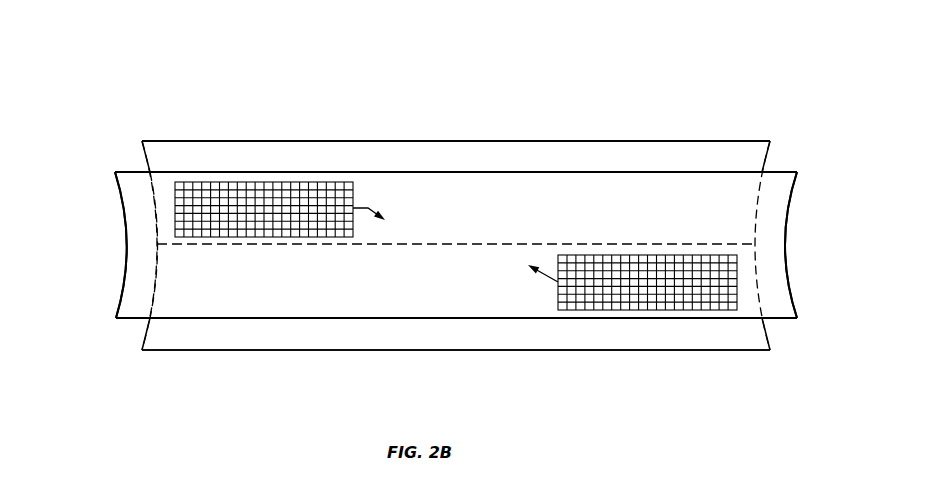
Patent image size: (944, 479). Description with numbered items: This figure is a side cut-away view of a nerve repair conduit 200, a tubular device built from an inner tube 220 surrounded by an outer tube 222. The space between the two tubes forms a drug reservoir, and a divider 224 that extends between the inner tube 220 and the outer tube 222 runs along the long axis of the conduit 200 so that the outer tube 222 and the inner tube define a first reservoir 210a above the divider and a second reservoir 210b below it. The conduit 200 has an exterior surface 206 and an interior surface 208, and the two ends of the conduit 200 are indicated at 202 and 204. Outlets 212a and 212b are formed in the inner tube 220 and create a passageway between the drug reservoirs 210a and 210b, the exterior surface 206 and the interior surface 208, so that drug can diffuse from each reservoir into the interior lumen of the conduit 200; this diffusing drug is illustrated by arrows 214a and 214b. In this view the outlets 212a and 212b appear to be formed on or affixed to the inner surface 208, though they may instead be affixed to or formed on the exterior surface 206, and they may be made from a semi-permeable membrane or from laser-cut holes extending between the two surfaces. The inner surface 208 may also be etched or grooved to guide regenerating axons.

The nerve repair conduit 200 is at (475, 112).
The first end 202 is at (109, 243).
The second end 204 is at (811, 242).
The exterior surface 206 is at (778, 172).
The interior surface 208 is at (157, 283).
The first reservoir 210a is at (222, 160).
The second reservoir 210b is at (233, 340).
The outlet 212a is at (290, 192).
The outlet 212b is at (680, 298).
The arrow illustrating diffusing drug 214a is at (368, 208).
The arrow illustrating diffusing drug 214b is at (556, 281).
The inner tube 220 is at (723, 187).
The outer tube 222 is at (673, 141).
The divider 224 is at (552, 243).